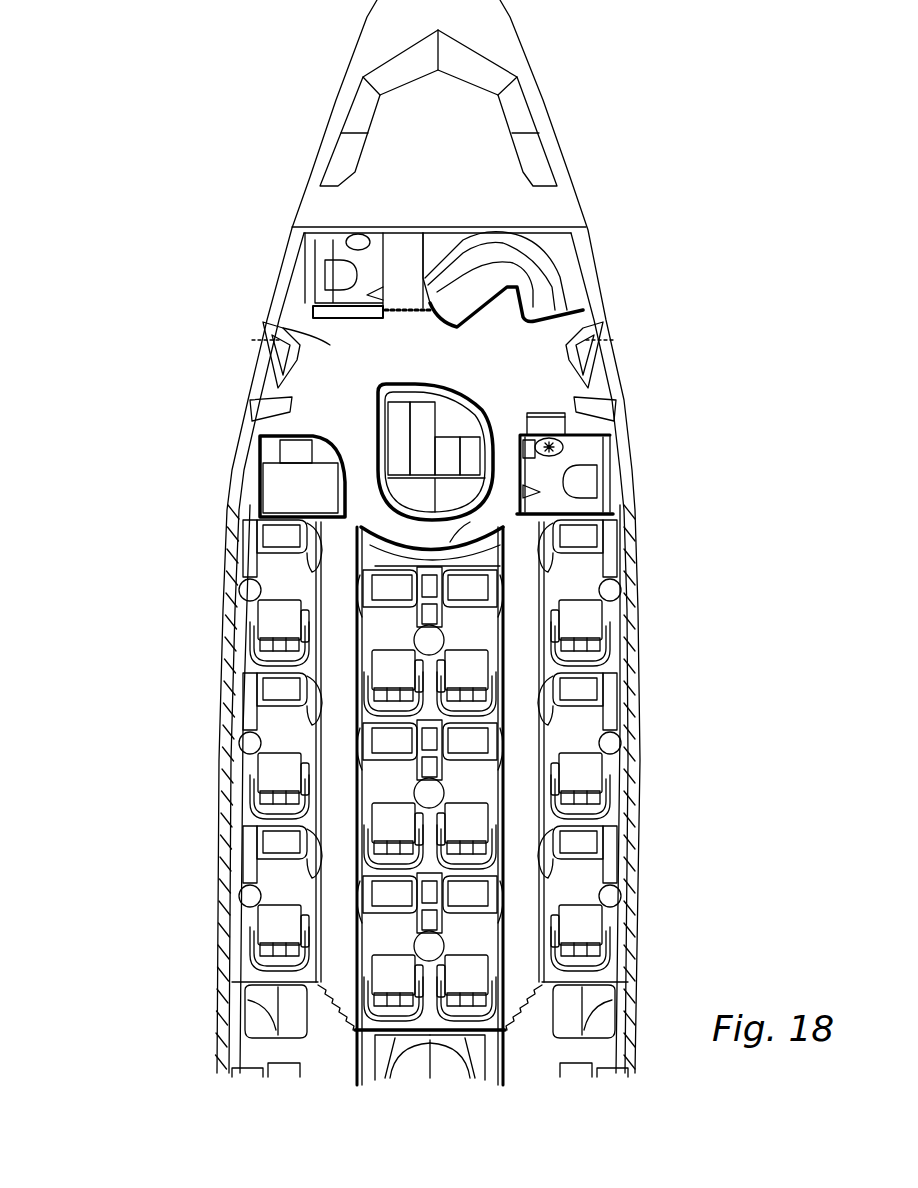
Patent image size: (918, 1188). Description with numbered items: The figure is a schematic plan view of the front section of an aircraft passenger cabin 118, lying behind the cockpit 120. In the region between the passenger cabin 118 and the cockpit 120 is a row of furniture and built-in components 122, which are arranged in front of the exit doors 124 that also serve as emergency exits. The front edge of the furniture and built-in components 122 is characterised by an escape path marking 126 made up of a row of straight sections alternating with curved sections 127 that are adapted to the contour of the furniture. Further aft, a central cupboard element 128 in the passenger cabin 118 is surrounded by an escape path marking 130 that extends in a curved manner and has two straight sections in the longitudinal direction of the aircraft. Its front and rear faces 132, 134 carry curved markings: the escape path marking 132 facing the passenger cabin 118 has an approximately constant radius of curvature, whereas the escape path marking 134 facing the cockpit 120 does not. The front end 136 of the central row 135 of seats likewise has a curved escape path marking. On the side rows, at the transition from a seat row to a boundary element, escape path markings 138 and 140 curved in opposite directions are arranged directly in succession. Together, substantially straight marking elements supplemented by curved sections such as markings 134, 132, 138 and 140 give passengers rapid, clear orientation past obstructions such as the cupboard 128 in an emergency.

The passenger cabin 118 is at (183, 724).
The cockpit 120 is at (390, 173).
The furniture and built-in components 122 is at (540, 280).
The exit doors 124 is at (610, 378).
The escape path marking 126 is at (263, 322).
The curved sections 127 is at (512, 305).
The central cupboard element 128 is at (470, 463).
The escape path marking 130 is at (377, 413).
The front face escape path marking 132 is at (260, 600).
The rear face escape path marking 134 is at (578, 348).
The central row 135 is at (467, 943).
The front end 136 is at (510, 527).
The escape path marking 138 is at (290, 512).
The escape path marking 140 is at (280, 462).